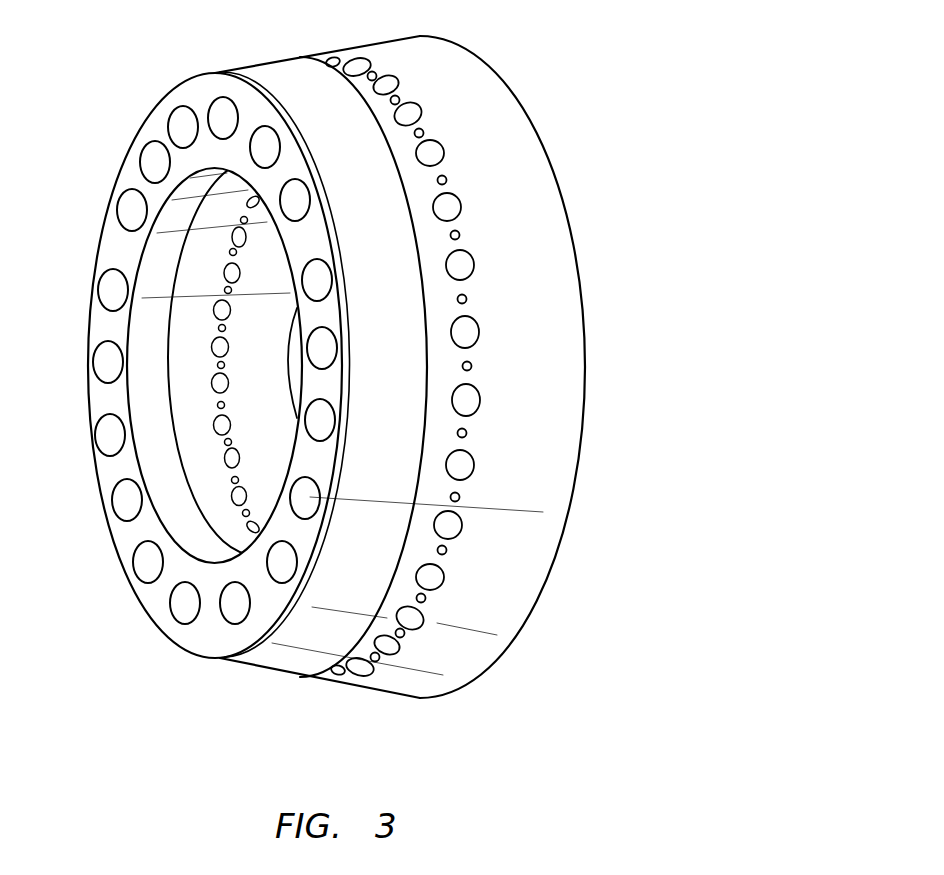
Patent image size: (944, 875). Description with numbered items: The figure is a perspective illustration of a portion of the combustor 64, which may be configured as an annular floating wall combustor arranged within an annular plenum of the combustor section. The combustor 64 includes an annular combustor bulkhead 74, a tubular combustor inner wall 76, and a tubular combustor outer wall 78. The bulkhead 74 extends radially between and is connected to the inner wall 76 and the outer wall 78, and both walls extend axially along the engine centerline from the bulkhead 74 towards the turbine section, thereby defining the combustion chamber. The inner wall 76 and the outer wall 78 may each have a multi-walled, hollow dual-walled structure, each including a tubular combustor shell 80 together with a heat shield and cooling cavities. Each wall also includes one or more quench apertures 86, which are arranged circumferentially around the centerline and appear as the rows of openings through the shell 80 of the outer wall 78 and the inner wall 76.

The combustor 64 is at (601, 62).
The combustor bulkhead 74 is at (188, 637).
The combustor inner wall 76 is at (166, 470).
The combustor outer wall 78 is at (549, 265).
The combustor shell 80 is at (152, 284).
The quench apertures 86 is at (232, 481).